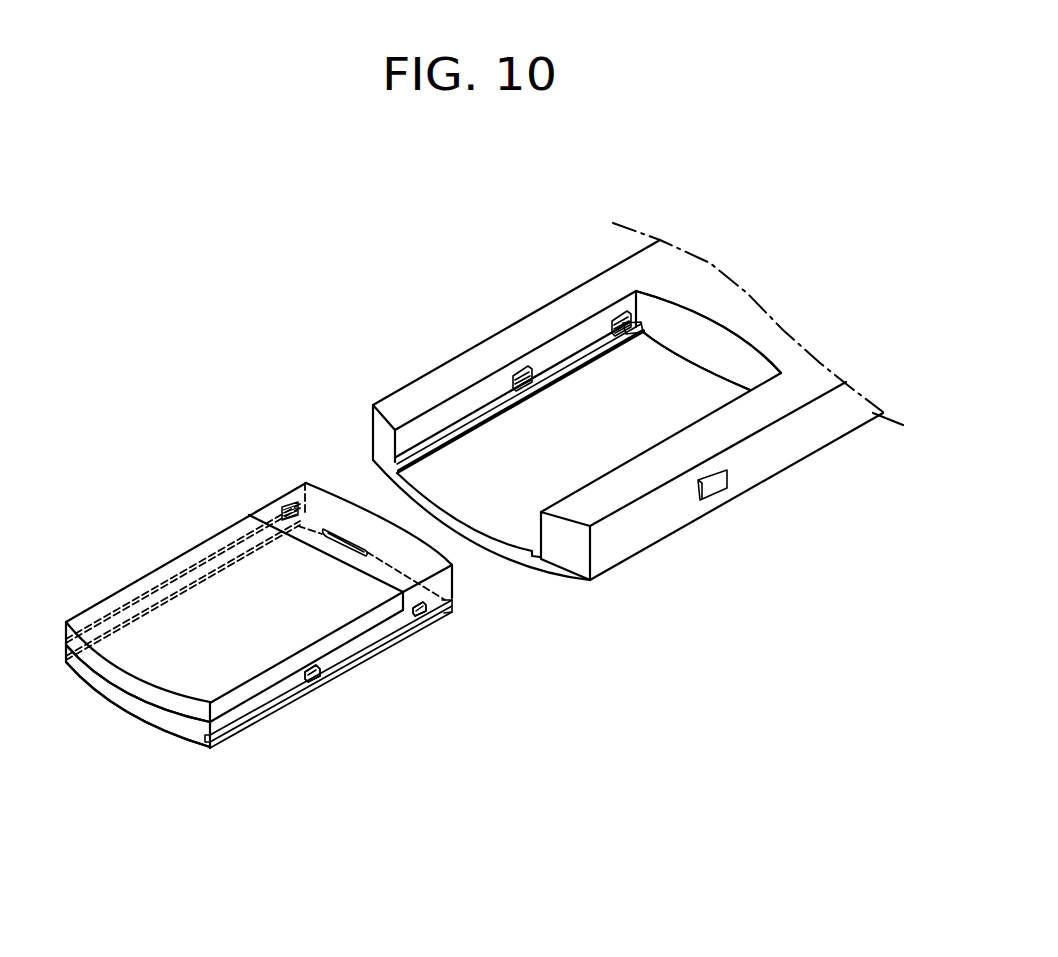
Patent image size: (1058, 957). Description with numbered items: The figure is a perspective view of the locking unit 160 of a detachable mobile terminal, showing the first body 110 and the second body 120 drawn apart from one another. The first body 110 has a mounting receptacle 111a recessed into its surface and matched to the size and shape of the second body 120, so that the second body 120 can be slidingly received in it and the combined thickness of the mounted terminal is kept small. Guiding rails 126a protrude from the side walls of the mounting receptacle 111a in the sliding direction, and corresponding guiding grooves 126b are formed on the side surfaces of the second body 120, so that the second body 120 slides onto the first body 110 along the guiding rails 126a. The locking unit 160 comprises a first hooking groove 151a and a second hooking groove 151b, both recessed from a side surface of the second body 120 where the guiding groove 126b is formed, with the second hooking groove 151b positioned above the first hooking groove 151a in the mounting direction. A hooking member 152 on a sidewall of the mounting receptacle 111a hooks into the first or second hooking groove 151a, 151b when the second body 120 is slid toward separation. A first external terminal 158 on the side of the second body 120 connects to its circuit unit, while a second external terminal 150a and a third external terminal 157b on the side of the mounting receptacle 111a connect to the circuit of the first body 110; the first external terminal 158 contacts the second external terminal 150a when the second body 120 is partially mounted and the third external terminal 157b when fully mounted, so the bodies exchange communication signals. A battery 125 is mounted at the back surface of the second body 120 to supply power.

The first body 110 is at (557, 289).
The mounting receptacle 111a is at (676, 383).
The second body 120 is at (128, 566).
The battery 125 is at (170, 663).
The guiding rails 126a is at (460, 425).
The guiding grooves 126b is at (255, 722).
The second external terminal 150a is at (527, 365).
The first hooking groove 151a is at (320, 679).
The second hooking groove 151b is at (427, 609).
The hooking member 152 is at (720, 490).
The third external terminal 157b is at (621, 308).
The first external terminal 158 is at (289, 502).
The locking unit 160 is at (791, 625).